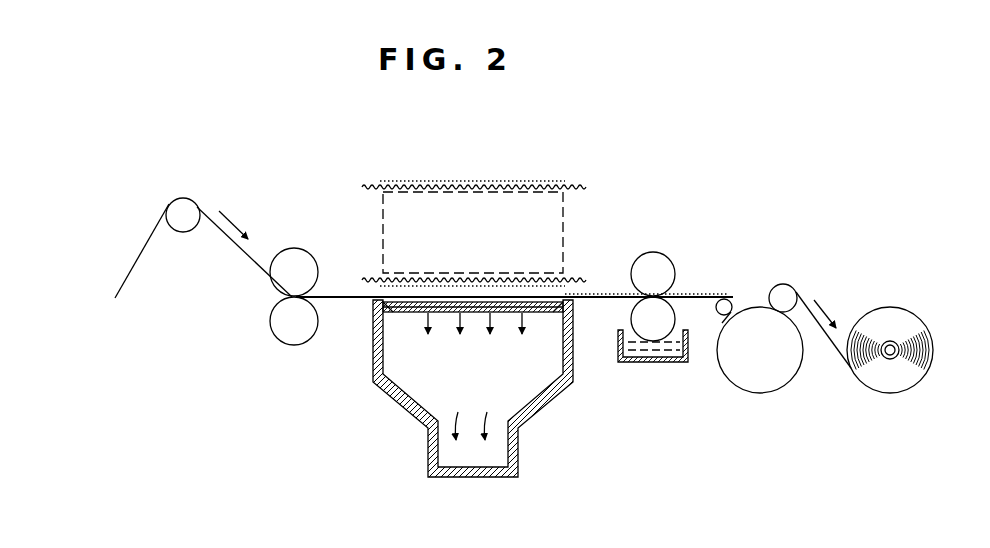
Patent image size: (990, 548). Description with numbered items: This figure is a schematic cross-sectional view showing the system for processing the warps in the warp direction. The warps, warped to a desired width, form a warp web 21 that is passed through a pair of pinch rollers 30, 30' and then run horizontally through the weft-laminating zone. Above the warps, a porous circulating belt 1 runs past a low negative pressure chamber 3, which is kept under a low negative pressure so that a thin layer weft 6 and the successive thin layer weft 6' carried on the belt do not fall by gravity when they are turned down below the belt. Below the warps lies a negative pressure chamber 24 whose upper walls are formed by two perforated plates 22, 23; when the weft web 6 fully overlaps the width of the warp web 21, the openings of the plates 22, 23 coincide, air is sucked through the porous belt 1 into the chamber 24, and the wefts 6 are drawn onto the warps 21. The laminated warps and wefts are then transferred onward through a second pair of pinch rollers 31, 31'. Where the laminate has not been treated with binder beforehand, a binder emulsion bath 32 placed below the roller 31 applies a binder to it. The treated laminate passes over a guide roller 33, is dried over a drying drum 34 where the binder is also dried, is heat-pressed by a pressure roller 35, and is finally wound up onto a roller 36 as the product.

The warp web 21 is at (126, 275).
The pinch roller 30' is at (293, 258).
The pinch roller 30 is at (264, 321).
The perforated plate 22 is at (372, 300).
The low negative pressure chamber 3 is at (388, 238).
The successive thin layer weft 6' is at (472, 163).
The circulating belt 1 is at (375, 185).
The thin layer weft 6 is at (491, 283).
The perforated plate 23 is at (538, 316).
The negative pressure chamber 24 is at (414, 401).
The pinch roller 31' is at (659, 253).
The pinch roller 31 is at (630, 319).
The binder emulsion bath 32 is at (626, 363).
The guide roller 33 is at (714, 292).
The drying drum 34 is at (790, 378).
The pressure roller 35 is at (786, 290).
The roller 36 is at (898, 318).